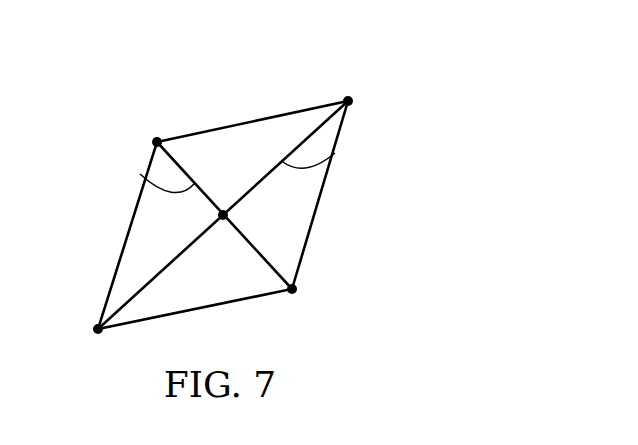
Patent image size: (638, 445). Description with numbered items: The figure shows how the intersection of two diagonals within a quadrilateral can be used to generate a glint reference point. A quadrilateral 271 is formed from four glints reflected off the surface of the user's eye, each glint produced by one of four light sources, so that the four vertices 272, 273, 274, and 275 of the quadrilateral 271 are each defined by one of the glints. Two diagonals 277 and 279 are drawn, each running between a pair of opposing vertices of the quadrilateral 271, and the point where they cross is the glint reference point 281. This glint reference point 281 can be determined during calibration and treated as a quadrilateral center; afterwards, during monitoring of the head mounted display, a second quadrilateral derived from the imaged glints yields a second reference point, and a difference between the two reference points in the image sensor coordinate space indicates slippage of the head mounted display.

The quadrilateral 271 is at (420, 67).
The vertex 272 is at (349, 96).
The vertex 273 is at (293, 296).
The vertex 274 is at (98, 336).
The vertex 275 is at (156, 136).
The diagonal 277 is at (140, 174).
The diagonal 279 is at (335, 153).
The glint reference point 281 is at (223, 208).